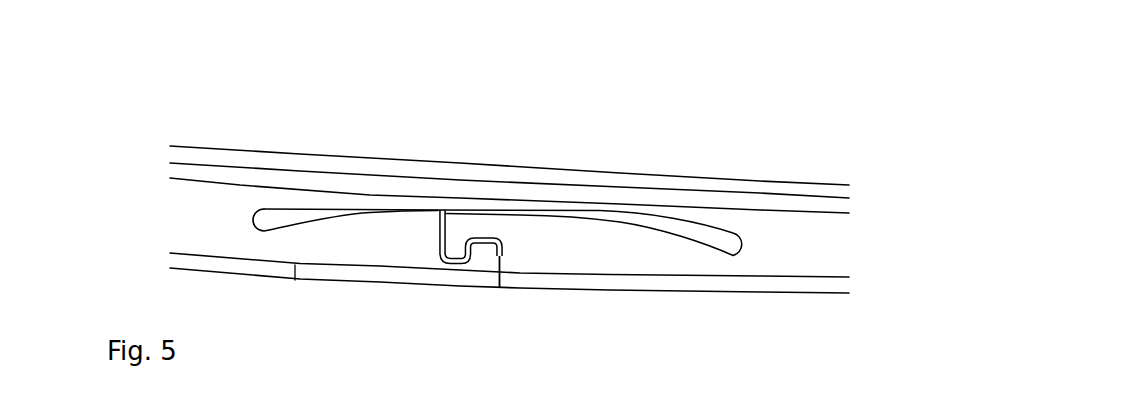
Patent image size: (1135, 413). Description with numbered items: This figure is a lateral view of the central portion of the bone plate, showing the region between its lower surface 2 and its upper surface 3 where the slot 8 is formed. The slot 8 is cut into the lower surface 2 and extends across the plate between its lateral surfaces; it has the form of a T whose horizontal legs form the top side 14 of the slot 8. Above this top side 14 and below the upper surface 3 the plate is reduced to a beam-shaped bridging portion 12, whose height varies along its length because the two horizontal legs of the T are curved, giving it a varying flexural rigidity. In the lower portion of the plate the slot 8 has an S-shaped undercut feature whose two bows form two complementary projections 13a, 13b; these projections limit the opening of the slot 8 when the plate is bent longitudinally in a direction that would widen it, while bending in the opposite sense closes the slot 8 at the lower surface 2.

The lower surface 2 is at (258, 278).
The upper surface 3 is at (291, 150).
The slot 8 is at (527, 300).
The bridging portion 12 is at (473, 190).
The complementary projection 13a is at (465, 250).
The complementary projection 13b is at (483, 253).
The top side of the slot 14 is at (352, 202).